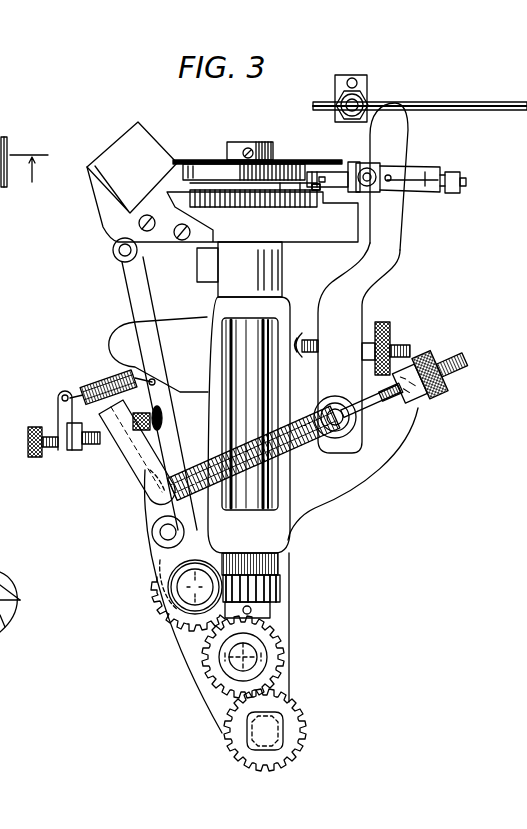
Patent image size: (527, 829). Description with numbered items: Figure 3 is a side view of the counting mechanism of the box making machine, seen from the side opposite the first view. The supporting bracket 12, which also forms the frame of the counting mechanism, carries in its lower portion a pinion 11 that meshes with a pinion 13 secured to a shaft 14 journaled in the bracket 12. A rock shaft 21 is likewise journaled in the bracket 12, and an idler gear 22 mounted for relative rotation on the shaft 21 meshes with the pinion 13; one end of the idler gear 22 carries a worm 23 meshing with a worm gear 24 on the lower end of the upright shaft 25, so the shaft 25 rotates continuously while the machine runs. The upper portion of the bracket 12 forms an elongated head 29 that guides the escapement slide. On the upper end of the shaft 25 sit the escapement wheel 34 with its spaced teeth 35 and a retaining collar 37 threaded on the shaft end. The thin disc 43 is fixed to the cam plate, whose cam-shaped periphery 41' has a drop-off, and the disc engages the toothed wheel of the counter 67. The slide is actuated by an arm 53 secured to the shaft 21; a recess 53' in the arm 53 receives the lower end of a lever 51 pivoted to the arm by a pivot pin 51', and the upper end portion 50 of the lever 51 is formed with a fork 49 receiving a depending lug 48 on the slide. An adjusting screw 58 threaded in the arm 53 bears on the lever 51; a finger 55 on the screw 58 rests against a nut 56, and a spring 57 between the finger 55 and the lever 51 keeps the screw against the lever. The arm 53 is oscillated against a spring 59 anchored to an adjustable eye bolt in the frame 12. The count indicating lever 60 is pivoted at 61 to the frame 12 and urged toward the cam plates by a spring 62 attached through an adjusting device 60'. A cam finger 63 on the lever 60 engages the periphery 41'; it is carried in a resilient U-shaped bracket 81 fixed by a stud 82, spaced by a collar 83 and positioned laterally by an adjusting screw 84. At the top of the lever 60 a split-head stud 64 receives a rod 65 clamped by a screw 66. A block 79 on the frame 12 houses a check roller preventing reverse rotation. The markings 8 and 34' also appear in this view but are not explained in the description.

The section line 8 is at (37, 165).
The pinion 11 is at (284, 713).
The bracket 12 is at (282, 536).
The pinion 13 is at (268, 643).
The shaft 14 is at (248, 664).
The rock shaft 21 is at (188, 588).
The idler gear 22 is at (160, 620).
The worm 23 is at (168, 614).
The worm gear 24 is at (276, 587).
The upright shaft 25 is at (255, 141).
The elongated head 29 is at (325, 238).
The escapement wheel 34 is at (253, 212).
The band end 34' is at (316, 187).
The teeth 35 is at (265, 201).
The retaining collar 37 is at (235, 141).
The cam-shaped periphery 41' is at (316, 157).
The thin disc 43 is at (209, 163).
The depending lug 48 is at (12, 136).
The fork 49 is at (20, 600).
The upper end portion 50 is at (113, 244).
The lever 51 is at (141, 393).
The pivot pin 51' is at (134, 532).
The arm 53 is at (128, 452).
The recess 53' is at (126, 488).
The finger 55 is at (58, 402).
The collar or nut 56 is at (80, 452).
The spring 57 is at (93, 383).
The adjusting screw 58 is at (50, 427).
The spring 59 is at (335, 440).
The lever 60 is at (359, 321).
The adjusting device 60' is at (407, 339).
The pivot 61 is at (353, 424).
The spring 62 is at (300, 331).
The cam engaging finger 63 is at (324, 170).
The stud 64 is at (357, 101).
The rod 65 is at (440, 105).
The clamping screw 66 is at (354, 79).
The counter 67 is at (136, 128).
The block 79 is at (205, 262).
The U-shaped bracket 81 is at (448, 193).
The stud 82 is at (467, 183).
The spacing collar 83 is at (432, 170).
The adjusting screw 84 is at (373, 168).